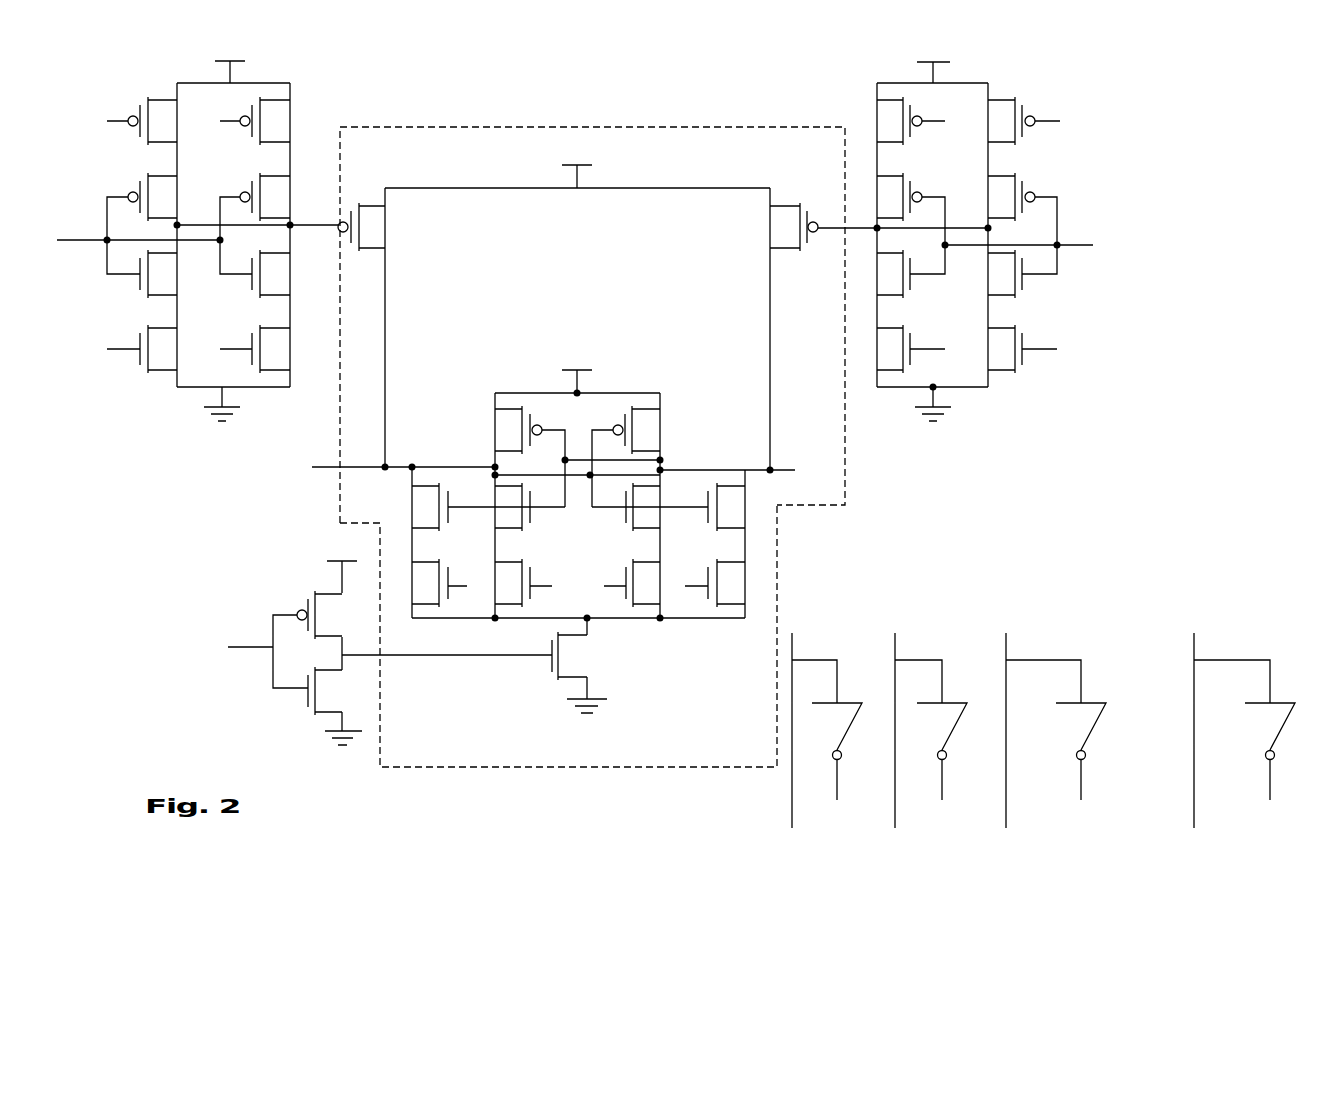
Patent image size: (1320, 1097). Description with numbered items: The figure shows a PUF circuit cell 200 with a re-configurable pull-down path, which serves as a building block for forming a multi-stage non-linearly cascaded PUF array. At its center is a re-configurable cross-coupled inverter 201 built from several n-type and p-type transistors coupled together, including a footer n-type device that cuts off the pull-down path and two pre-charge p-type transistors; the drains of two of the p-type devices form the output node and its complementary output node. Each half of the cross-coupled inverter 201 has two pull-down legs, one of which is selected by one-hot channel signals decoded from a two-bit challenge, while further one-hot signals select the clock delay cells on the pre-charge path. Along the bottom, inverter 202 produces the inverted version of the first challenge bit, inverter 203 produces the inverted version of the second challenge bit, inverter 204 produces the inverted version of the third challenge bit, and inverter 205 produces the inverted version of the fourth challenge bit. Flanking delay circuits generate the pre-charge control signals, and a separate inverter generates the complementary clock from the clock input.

The PUF circuit cell 200 is at (677, 457).
The cross-coupled inverter 201 is at (440, 128).
The inverter 202 is at (837, 721).
The inverter 203 is at (942, 721).
The inverter 204 is at (1072, 720).
The inverter 205 is at (1258, 720).